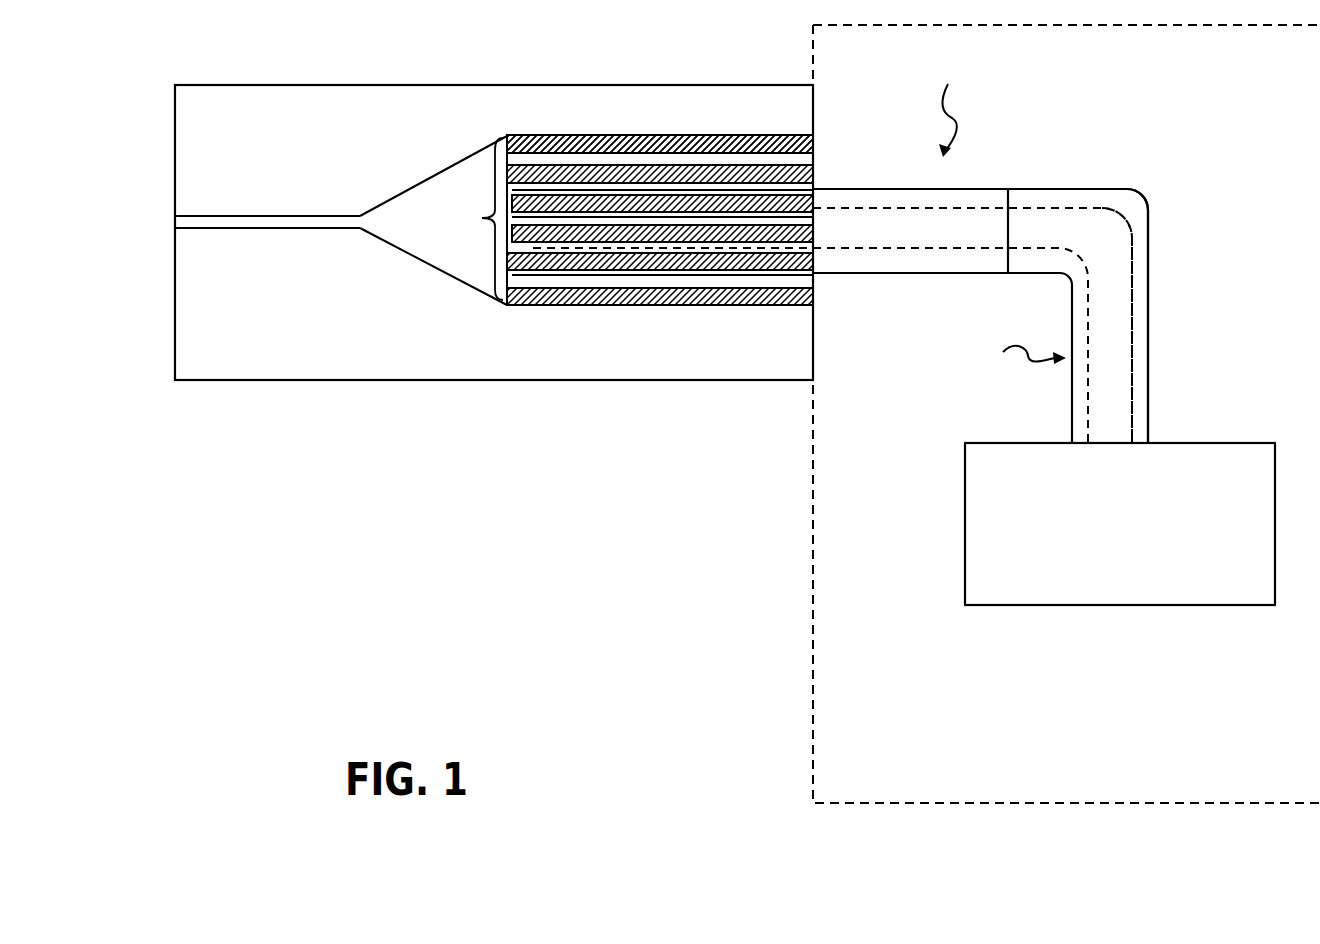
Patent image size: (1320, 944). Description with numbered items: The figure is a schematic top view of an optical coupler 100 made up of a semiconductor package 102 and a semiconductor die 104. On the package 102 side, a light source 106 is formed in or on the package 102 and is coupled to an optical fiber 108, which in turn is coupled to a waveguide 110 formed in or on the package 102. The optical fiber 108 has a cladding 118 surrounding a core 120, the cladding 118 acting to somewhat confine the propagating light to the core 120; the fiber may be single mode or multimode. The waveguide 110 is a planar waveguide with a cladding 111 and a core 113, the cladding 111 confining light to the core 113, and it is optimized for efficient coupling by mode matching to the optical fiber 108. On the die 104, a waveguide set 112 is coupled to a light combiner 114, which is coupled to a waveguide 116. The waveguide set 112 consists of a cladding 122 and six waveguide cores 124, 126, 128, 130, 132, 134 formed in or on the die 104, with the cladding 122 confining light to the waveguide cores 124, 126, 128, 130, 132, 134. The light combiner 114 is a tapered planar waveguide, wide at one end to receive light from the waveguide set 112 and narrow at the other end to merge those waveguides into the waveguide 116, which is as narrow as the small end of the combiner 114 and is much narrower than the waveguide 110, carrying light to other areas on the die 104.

The optical coupler 100 is at (535, 690).
The semiconductor package 102 is at (907, 805).
The semiconductor die 104 is at (620, 381).
The light source 106 is at (993, 606).
The optical fiber 108 is at (1017, 360).
The waveguide 110 is at (955, 107).
The cladding 111 is at (907, 188).
The waveguide set 112 is at (657, 227).
The core 113 is at (883, 249).
The light combiner 114 is at (417, 182).
The waveguide 116 is at (237, 230).
The cladding 118 is at (1150, 225).
The core 120 is at (1132, 305).
The cladding 122 is at (813, 157).
The waveguide core 124 is at (543, 306).
The waveguide core 126 is at (625, 272).
The waveguide core 128 is at (703, 243).
The waveguide core 130 is at (587, 196).
The waveguide core 132 is at (667, 163).
The waveguide core 134 is at (757, 135).